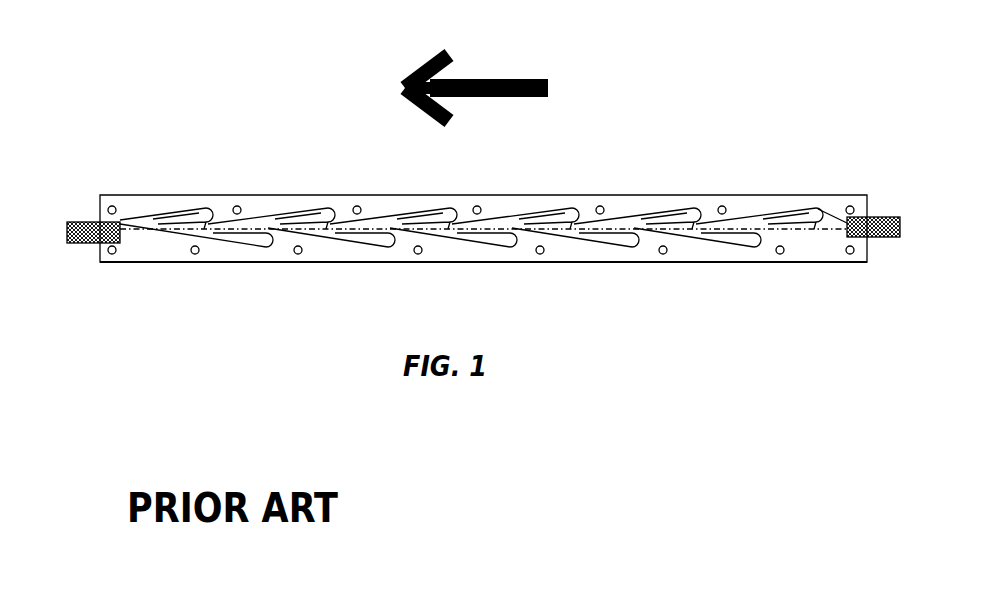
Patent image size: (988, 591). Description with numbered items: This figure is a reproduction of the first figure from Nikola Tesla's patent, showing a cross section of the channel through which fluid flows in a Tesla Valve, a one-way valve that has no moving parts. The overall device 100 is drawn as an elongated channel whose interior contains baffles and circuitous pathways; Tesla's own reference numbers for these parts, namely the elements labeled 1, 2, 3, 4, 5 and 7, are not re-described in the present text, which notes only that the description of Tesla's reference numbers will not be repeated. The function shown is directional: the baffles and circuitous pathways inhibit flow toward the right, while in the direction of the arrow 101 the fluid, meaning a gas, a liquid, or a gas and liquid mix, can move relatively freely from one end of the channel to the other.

The housing plate 1 is at (221, 197).
The spring loop 2 is at (574, 224).
The spring strip 3 is at (251, 256).
The left end piece 4 is at (68, 232).
The right end piece 5 is at (868, 236).
The central guide line 7 is at (699, 226).
The prior art energy absorber 100 is at (152, 137).
The arrow 101 is at (428, 62).